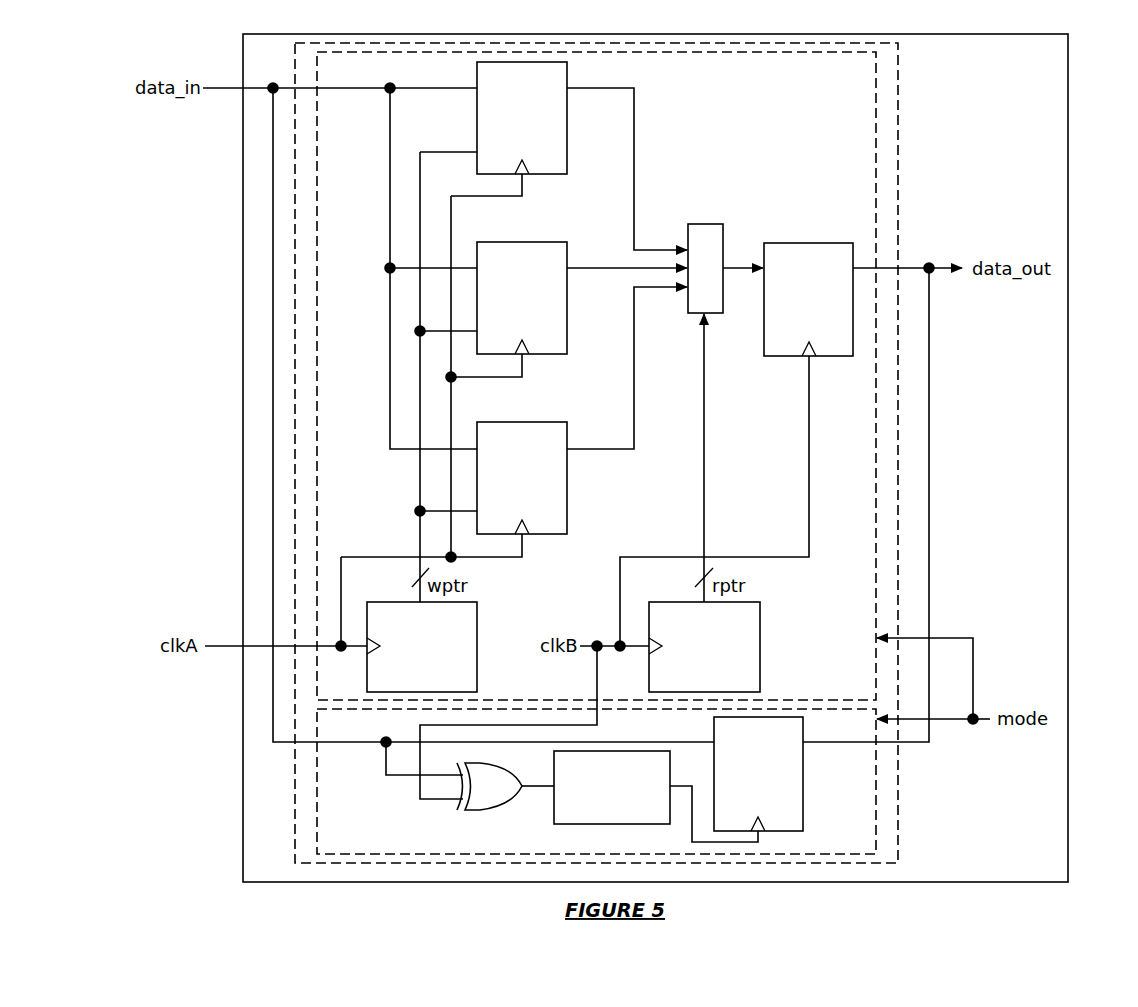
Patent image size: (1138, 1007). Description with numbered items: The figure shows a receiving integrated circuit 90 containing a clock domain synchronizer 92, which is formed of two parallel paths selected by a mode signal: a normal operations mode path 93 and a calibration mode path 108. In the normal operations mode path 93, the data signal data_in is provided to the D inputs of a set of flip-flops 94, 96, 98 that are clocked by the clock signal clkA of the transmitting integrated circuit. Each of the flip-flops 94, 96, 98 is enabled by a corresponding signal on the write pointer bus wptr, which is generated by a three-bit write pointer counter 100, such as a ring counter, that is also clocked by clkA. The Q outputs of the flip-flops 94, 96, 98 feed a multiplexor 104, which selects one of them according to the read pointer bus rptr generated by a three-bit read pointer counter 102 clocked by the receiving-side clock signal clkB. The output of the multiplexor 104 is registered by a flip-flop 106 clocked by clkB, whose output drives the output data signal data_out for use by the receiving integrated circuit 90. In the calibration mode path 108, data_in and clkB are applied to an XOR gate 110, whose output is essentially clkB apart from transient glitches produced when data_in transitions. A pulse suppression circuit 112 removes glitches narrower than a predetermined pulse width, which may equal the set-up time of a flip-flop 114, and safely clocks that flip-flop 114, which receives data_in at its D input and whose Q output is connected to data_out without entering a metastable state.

The receiving integrated circuit 90 is at (1068, 88).
The clock domain synchronizer 92 is at (898, 145).
The normal operations mode path 93 is at (596, 376).
The flip-flop 94 is at (567, 165).
The flip-flop 96 is at (567, 345).
The flip-flop 98 is at (567, 525).
The write pointer counter 100 is at (477, 613).
The read pointer counter 102 is at (760, 613).
The multiplexor 104 is at (700, 224).
The flip-flop 106 is at (814, 243).
The calibration mode path 108 is at (596, 781).
The XOR gate 110 is at (498, 771).
The pulse suppression circuit 112 is at (554, 808).
The flip-flop 114 is at (803, 812).